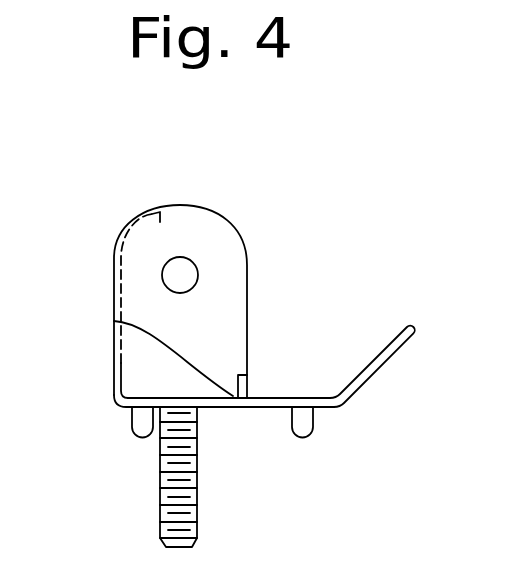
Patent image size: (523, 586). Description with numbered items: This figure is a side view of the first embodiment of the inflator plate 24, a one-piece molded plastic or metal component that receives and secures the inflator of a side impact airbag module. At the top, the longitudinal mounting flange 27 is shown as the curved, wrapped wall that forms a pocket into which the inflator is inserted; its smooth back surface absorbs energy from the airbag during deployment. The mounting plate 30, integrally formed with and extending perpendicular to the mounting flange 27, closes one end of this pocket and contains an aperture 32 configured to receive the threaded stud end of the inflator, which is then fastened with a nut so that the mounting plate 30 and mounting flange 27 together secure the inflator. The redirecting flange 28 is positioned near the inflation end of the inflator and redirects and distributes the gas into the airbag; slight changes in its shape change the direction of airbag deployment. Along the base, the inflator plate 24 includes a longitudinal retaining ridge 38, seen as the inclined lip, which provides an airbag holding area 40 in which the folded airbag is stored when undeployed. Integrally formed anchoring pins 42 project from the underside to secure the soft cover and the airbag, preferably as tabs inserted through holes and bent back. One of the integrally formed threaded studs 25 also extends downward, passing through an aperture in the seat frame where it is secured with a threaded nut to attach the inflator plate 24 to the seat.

The inflator plate 24 is at (240, 407).
The threaded studs 25 is at (160, 525).
The longitudinal mounting flange 27 is at (115, 258).
The redirecting flange 28 is at (114, 321).
The mounting plate 30 is at (227, 277).
The aperture 32 is at (178, 272).
The longitudinal retaining ridge 38 is at (391, 336).
The airbag holding area 40 is at (280, 398).
The anchoring pins 42 is at (142, 438).